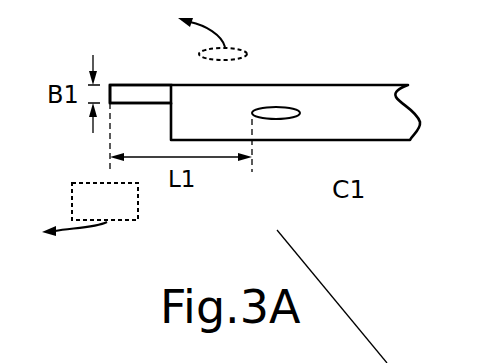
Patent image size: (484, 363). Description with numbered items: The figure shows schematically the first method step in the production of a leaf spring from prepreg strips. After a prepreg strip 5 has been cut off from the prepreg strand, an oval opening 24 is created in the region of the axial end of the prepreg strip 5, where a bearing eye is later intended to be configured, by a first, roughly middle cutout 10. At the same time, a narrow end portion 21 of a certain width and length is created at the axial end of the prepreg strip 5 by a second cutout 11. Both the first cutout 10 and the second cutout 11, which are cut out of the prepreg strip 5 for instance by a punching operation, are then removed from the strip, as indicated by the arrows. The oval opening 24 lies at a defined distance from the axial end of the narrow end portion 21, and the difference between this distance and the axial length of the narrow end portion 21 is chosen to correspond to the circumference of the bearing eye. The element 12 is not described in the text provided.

The prepreg strip 5 is at (363, 90).
The narrow end portion 21 is at (135, 93).
The oval opening 24 is at (282, 107).
The first cutout 10 is at (233, 50).
The second cutout 11 is at (128, 222).
The adjacent element 12 is at (369, 296).